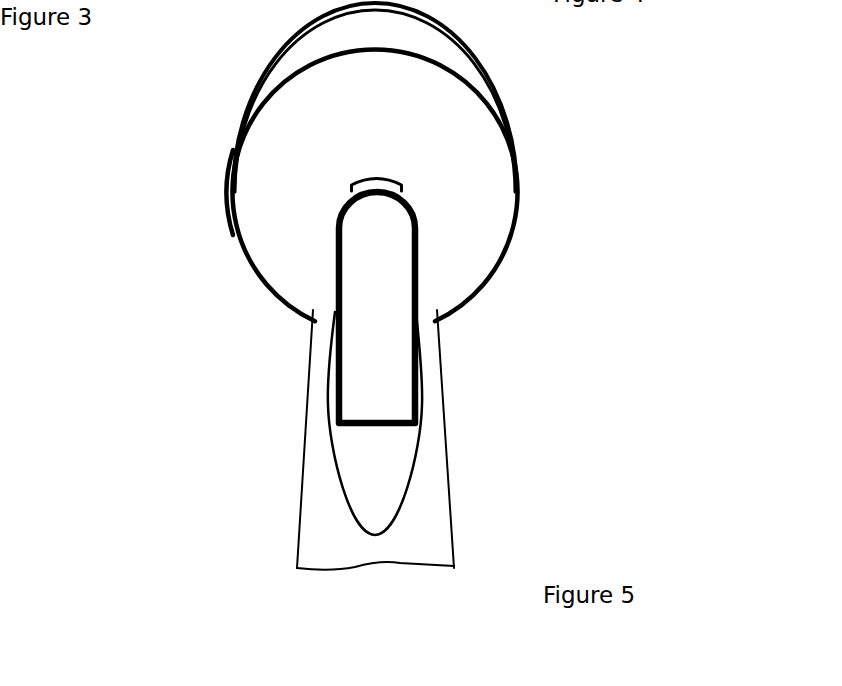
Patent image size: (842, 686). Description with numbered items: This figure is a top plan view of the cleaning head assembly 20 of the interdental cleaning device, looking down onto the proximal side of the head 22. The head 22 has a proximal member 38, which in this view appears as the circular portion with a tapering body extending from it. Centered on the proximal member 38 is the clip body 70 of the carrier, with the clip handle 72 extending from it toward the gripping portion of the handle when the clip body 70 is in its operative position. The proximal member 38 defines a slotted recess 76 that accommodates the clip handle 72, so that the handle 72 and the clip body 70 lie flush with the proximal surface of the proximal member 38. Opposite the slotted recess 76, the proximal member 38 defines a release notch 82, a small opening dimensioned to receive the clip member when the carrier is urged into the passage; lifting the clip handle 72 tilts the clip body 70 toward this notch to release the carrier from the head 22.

The cleaning head assembly 20 is at (176, 127).
The head 22 is at (517, 211).
The proximal member 38 is at (240, 185).
The clip body 70 is at (358, 231).
The clip handle 72 is at (397, 380).
The slotted recess 76 is at (426, 248).
The release notch 82 is at (404, 184).